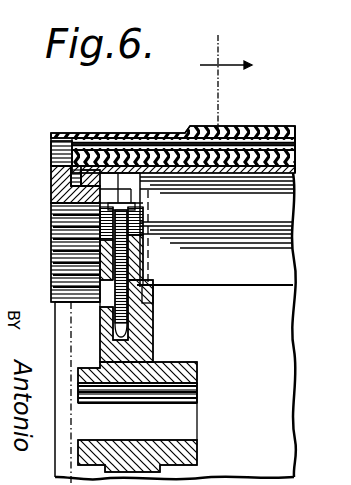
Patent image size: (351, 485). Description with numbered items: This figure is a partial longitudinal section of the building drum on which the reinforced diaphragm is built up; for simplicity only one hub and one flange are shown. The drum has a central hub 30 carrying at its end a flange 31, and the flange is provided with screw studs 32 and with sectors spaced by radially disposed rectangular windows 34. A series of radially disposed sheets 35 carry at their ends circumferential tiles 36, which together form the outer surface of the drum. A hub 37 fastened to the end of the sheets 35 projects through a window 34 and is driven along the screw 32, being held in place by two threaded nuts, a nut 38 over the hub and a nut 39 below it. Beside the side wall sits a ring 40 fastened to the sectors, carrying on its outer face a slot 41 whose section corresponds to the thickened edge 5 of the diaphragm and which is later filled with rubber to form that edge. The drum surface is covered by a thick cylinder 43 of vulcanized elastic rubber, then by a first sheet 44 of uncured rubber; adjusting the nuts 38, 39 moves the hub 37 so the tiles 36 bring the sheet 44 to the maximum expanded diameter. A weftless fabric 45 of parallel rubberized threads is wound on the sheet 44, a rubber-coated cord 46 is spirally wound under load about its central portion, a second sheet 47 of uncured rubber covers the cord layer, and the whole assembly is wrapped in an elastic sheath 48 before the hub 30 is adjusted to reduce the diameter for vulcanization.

The thickened edge 5 is at (226, 84).
The central hub 30 is at (198, 372).
The flange 31 is at (152, 327).
The screw stud 32 is at (107, 297).
The rectangular window 34 is at (150, 293).
The radially disposed sheet 35 is at (295, 240).
The circumferential tile 36 is at (256, 175).
The hub 37 is at (70, 262).
The nut 38 is at (62, 238).
The nut 39 is at (100, 284).
The ring 40 is at (52, 195).
The slot 41 is at (80, 186).
The cylinder of vulcanized elastic rubber 43 is at (297, 166).
The first sheet of uncured rubber 44 is at (297, 156).
The weftless fabric 45 is at (297, 147).
The cord 46 is at (297, 141).
The second sheet of uncured rubber 47 is at (296, 132).
The elastic sheath 48 is at (250, 126).